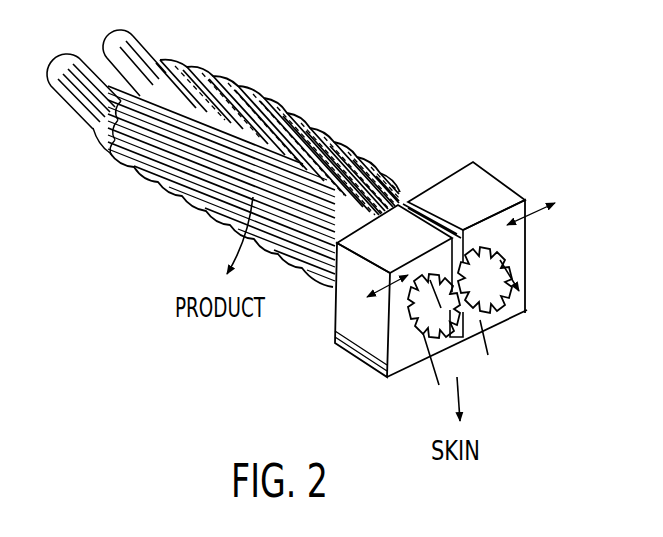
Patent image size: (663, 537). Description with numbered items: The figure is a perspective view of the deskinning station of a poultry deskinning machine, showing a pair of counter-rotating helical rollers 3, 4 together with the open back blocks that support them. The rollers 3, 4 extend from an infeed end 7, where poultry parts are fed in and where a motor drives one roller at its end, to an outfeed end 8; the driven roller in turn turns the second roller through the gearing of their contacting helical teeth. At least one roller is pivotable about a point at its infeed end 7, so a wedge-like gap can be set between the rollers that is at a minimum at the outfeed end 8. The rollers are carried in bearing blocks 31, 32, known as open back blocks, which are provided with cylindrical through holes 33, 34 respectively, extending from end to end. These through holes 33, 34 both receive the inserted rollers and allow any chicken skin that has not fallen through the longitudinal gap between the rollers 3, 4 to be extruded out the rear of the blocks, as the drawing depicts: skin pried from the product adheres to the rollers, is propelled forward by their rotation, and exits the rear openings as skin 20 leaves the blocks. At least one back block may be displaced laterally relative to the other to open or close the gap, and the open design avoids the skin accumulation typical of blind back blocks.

The helical roller 3 is at (188, 208).
The helical roller 4 is at (280, 113).
The infeed end 7 is at (173, 55).
The outfeed end 8 is at (405, 203).
The skin strip 20 is at (463, 323).
The bearing block 31 is at (362, 363).
The bearing block 32 is at (522, 307).
The cylindrical through hole 33 is at (430, 340).
The cylindrical through hole 34 is at (500, 307).